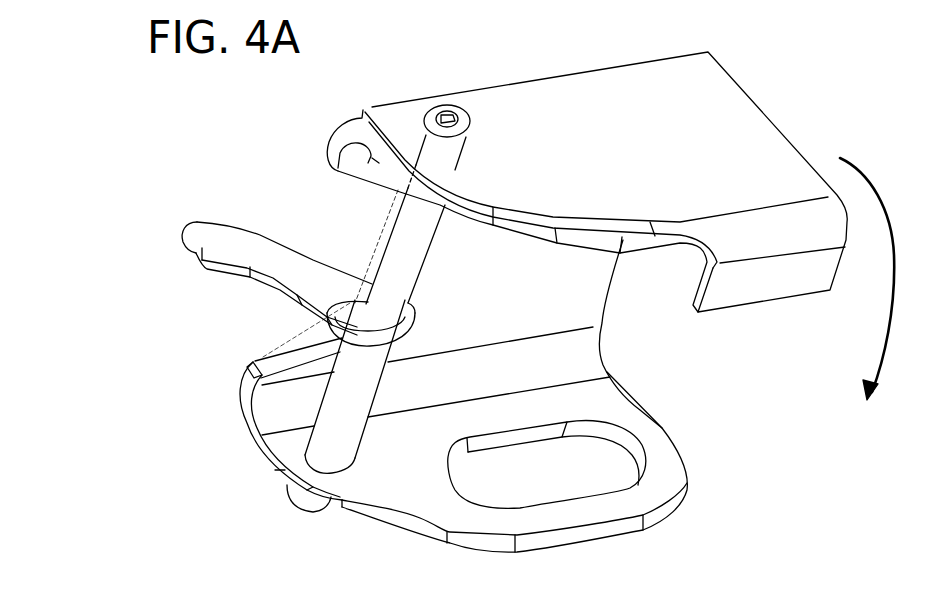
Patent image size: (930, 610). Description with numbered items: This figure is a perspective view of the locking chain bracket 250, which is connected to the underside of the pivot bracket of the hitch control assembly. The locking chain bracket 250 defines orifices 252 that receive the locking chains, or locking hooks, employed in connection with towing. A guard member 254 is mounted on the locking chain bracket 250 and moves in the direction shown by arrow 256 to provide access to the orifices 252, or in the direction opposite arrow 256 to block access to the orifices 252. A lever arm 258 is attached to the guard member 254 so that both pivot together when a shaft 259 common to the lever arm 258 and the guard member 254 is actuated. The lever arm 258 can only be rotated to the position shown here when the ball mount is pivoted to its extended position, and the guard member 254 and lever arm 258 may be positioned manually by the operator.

The locking chain bracket 250 is at (156, 300).
The orifices 252 is at (608, 466).
The guard member 254 is at (740, 165).
The arrow 256 is at (882, 333).
The lever arm 258 is at (237, 240).
The shaft 259 is at (403, 258).